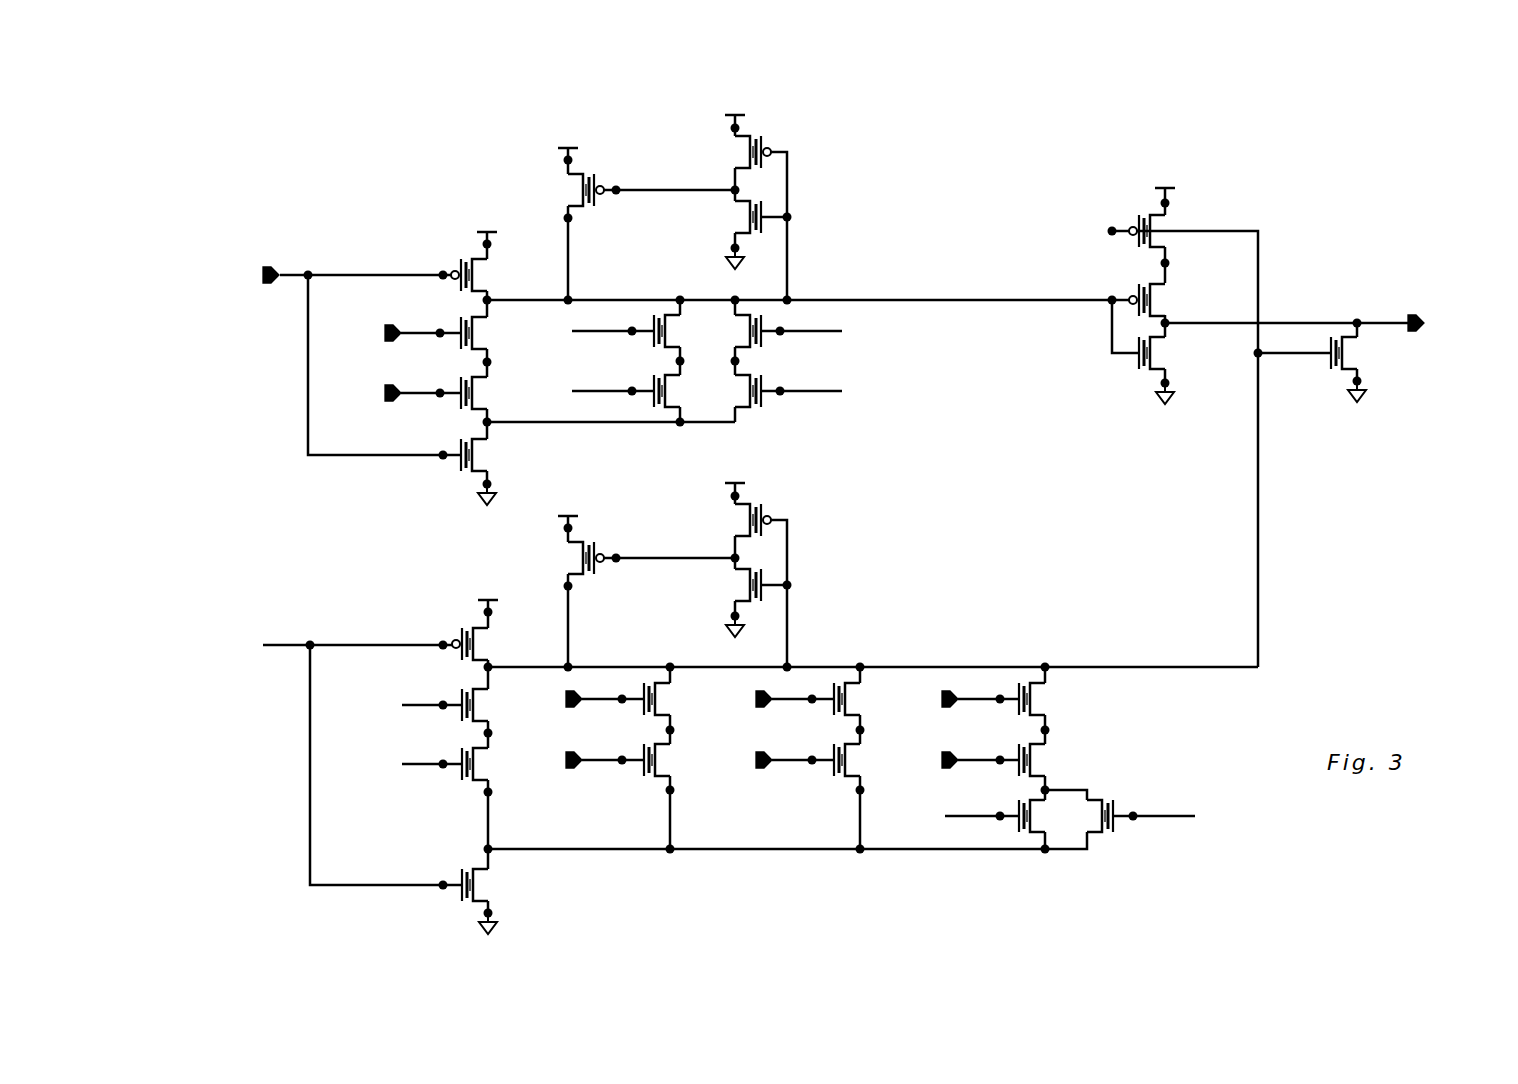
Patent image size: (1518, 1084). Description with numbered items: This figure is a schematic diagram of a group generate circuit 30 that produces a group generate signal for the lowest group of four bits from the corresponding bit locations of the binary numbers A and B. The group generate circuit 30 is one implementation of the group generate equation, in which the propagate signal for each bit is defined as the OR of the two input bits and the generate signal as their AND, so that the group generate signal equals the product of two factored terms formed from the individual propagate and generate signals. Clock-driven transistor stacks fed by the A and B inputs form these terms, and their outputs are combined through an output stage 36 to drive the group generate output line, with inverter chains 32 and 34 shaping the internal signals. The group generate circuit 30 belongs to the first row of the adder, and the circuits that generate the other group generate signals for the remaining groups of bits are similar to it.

The group generate circuit 30 is at (1028, 184).
The inverter chain 32 is at (675, 207).
The inverter chain 34 is at (675, 575).
The output stage 36 is at (1308, 427).